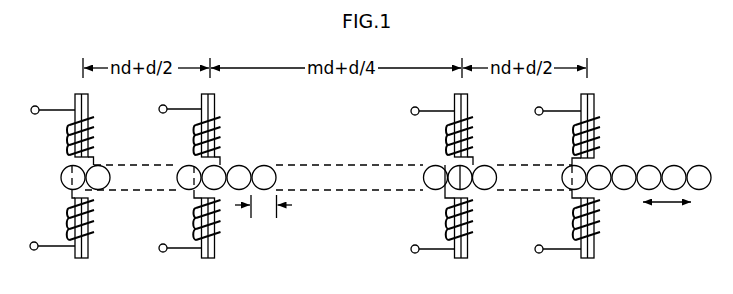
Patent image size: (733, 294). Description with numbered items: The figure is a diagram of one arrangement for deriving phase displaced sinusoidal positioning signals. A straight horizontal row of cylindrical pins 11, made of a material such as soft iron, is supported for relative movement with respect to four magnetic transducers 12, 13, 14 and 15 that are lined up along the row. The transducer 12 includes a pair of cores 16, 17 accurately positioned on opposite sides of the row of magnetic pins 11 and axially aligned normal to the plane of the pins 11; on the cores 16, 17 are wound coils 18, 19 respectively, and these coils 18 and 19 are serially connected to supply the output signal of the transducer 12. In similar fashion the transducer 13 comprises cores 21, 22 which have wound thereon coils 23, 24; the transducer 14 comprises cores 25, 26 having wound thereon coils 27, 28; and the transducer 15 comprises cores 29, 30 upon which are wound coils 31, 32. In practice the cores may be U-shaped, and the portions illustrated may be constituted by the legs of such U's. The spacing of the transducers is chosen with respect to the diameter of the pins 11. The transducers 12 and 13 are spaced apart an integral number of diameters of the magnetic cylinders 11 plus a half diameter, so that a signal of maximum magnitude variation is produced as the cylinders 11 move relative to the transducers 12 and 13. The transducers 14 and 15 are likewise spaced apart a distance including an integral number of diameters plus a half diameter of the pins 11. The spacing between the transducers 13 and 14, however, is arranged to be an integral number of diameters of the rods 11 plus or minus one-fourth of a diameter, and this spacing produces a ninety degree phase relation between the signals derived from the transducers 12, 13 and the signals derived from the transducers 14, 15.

The cylindrical pins 11 is at (263, 167).
The magnetic transducer 12 is at (81, 190).
The magnetic transducer 13 is at (209, 190).
The magnetic transducer 14 is at (461, 190).
The magnetic transducer 15 is at (586, 190).
The core 16 is at (88, 103).
The core 17 is at (88, 253).
The coil 18 is at (93, 130).
The coil 19 is at (92, 213).
The core 21 is at (214, 103).
The core 22 is at (214, 255).
The coil 23 is at (219, 130).
The coil 24 is at (218, 226).
The core 25 is at (468, 103).
The core 26 is at (468, 252).
The coil 27 is at (471, 137).
The coil 28 is at (471, 215).
The core 29 is at (594, 103).
The core 30 is at (594, 258).
The coil 31 is at (598, 133).
The coil 32 is at (598, 215).